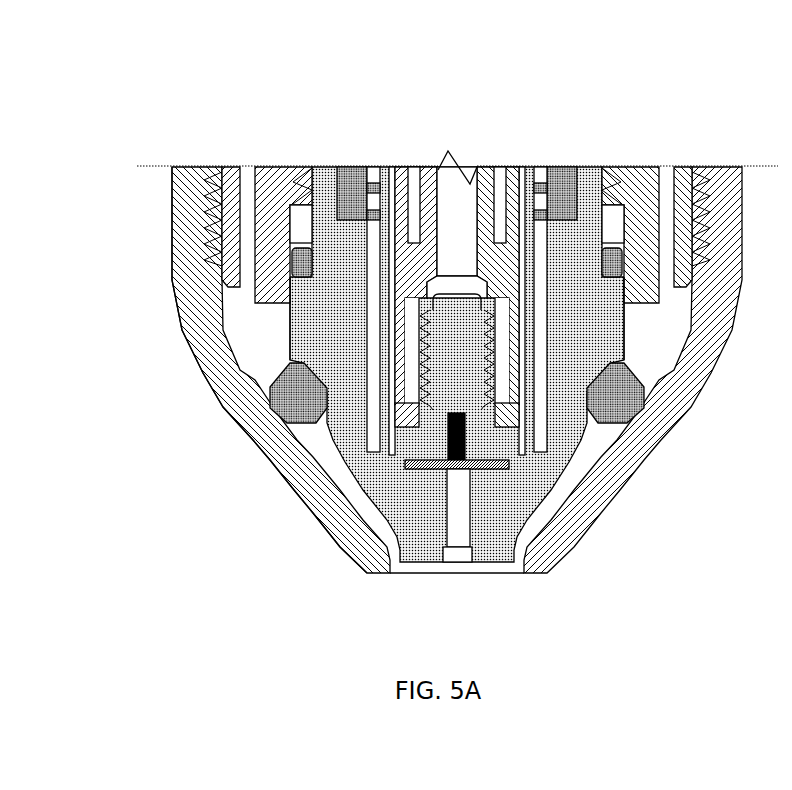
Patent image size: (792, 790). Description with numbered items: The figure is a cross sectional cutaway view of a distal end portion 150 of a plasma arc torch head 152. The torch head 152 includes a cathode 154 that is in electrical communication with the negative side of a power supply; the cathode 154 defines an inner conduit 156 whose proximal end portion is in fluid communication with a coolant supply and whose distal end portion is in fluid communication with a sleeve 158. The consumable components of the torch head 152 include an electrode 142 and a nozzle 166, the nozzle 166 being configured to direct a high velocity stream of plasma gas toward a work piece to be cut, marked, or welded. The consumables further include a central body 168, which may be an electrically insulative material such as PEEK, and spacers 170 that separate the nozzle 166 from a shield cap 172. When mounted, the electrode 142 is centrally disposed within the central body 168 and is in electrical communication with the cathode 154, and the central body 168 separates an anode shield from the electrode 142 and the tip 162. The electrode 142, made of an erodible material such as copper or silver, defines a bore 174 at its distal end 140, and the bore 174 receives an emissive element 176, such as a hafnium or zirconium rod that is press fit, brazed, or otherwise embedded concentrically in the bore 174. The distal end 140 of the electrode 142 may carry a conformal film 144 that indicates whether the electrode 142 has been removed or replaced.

The distal end 140 is at (350, 442).
The electrode 142 is at (520, 403).
The conformal film 144 is at (500, 470).
The distal end portion 150 is at (176, 407).
The plasma arc torch head 152 is at (408, 104).
The cathode 154 is at (402, 173).
The inner conduit 156 is at (459, 178).
The sleeve 158 is at (487, 173).
The tip 162 is at (422, 555).
The nozzle 166 is at (303, 347).
The central body 168 is at (282, 174).
The spacers 170 is at (253, 418).
The shield cap 172 is at (549, 551).
The bore 174 is at (455, 412).
The emissive element 176 is at (467, 445).